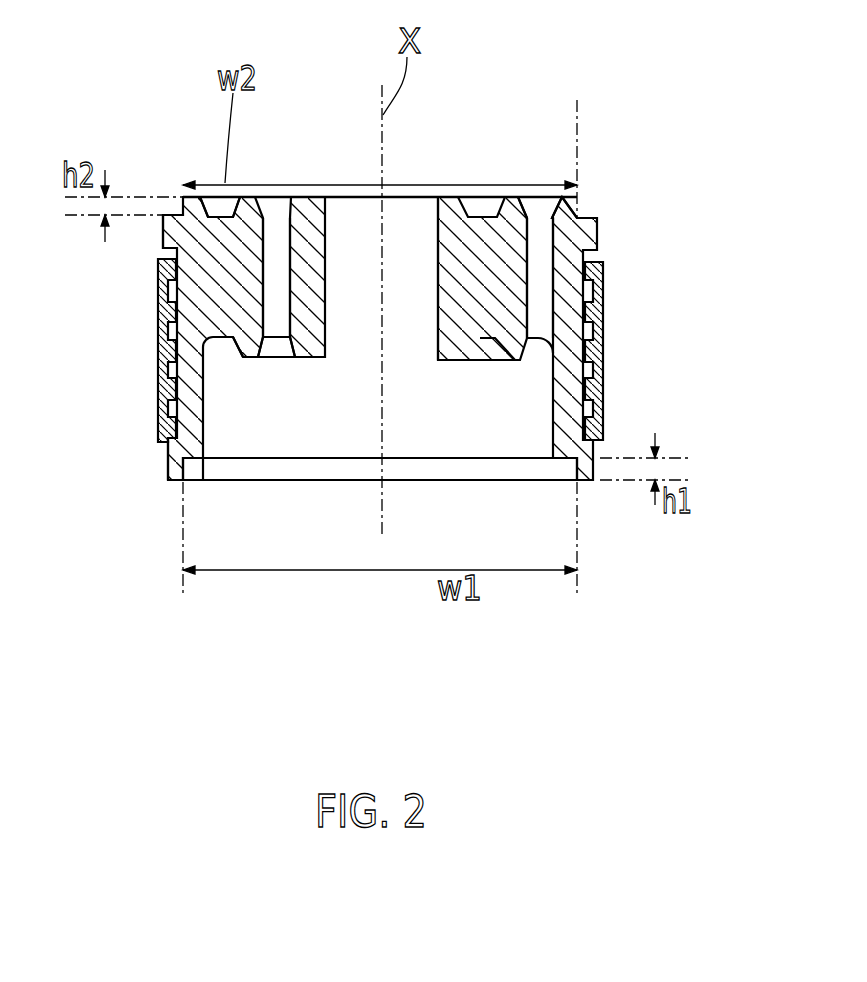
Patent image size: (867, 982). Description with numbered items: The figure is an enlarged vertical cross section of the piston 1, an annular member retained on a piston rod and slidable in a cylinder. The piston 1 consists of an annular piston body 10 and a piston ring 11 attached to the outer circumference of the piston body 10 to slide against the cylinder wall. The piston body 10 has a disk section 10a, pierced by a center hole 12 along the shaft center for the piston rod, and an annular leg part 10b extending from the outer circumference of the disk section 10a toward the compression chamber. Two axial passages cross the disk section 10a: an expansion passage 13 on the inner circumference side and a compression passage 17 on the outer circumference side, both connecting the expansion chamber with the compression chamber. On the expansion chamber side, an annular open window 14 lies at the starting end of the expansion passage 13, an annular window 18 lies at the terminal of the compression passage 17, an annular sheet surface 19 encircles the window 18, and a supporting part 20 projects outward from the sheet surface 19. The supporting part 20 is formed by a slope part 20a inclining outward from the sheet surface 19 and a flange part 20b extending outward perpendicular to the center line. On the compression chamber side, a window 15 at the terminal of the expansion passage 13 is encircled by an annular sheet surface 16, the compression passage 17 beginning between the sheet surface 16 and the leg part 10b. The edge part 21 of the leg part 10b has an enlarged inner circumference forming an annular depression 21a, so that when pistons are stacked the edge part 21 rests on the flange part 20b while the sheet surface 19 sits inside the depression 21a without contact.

The piston 1 is at (568, 116).
The piston body 10 is at (477, 194).
The disk section 10a is at (423, 363).
The leg part 10b is at (550, 425).
The piston ring 11 is at (157, 353).
The center hole 12 is at (438, 240).
The expansion passage 13 is at (315, 235).
The annular open window 14 is at (274, 207).
The window 15 is at (282, 355).
The annular sheet surface 16 is at (243, 357).
The compression passage 17 is at (538, 270).
The annular window 18 is at (537, 210).
The sheet surface 19 is at (581, 213).
The supporting part 20 is at (596, 205).
The slope part 20a is at (190, 197).
The flange part 20b is at (160, 238).
The edge part 21 is at (165, 459).
The depression 21a is at (192, 482).